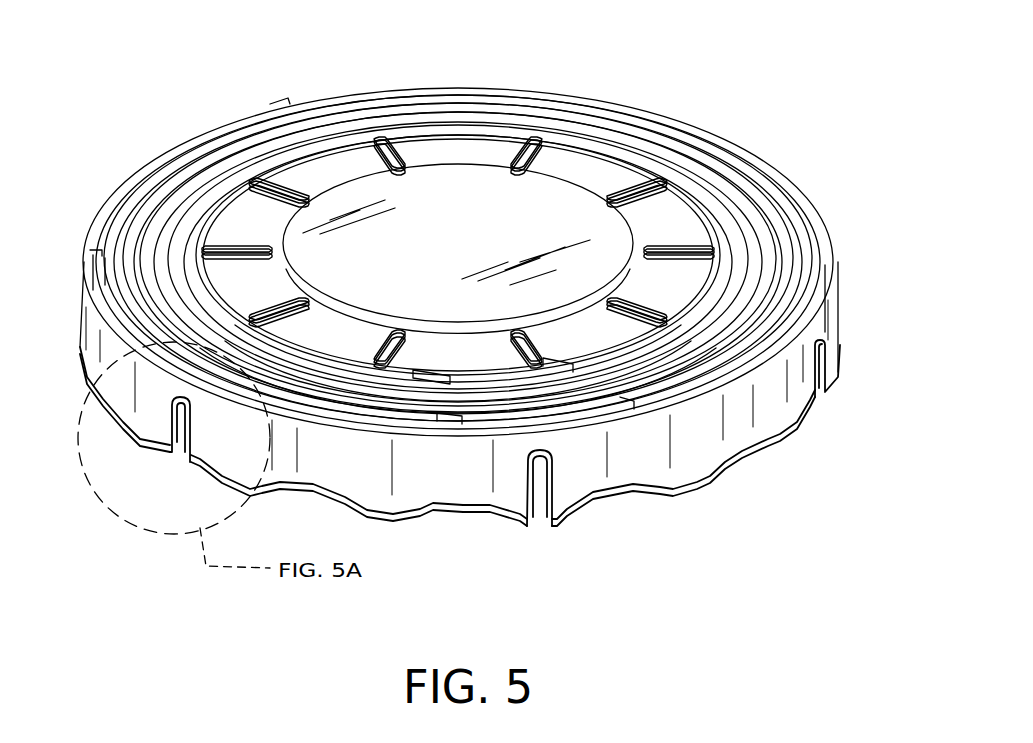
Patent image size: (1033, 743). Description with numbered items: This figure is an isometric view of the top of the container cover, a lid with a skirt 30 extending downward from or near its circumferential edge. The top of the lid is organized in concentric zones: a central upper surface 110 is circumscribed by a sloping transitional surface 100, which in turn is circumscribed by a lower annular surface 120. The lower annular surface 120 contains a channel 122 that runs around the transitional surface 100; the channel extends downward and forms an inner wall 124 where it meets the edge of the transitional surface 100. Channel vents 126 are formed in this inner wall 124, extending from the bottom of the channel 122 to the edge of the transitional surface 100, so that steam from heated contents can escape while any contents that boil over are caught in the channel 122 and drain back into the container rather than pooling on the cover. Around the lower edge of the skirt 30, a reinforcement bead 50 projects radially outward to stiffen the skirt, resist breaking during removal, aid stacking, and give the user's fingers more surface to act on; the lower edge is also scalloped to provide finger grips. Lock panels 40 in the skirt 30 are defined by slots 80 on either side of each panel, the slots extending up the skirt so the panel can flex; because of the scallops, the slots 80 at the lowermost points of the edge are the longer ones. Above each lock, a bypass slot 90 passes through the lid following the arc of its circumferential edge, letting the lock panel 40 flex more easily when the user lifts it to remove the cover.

The skirt 30 is at (840, 292).
The lock panel 40 is at (707, 438).
The reinforcement bead 50 is at (580, 500).
The slot 80 is at (540, 513).
The bypass slot 90 is at (470, 420).
The sloping transitional surface 100 is at (575, 163).
The central upper surface 110 is at (463, 195).
The lower annular surface 120 is at (638, 150).
The channel 122 is at (183, 260).
The inner wall 124 is at (720, 263).
The channel vent 126 is at (430, 375).